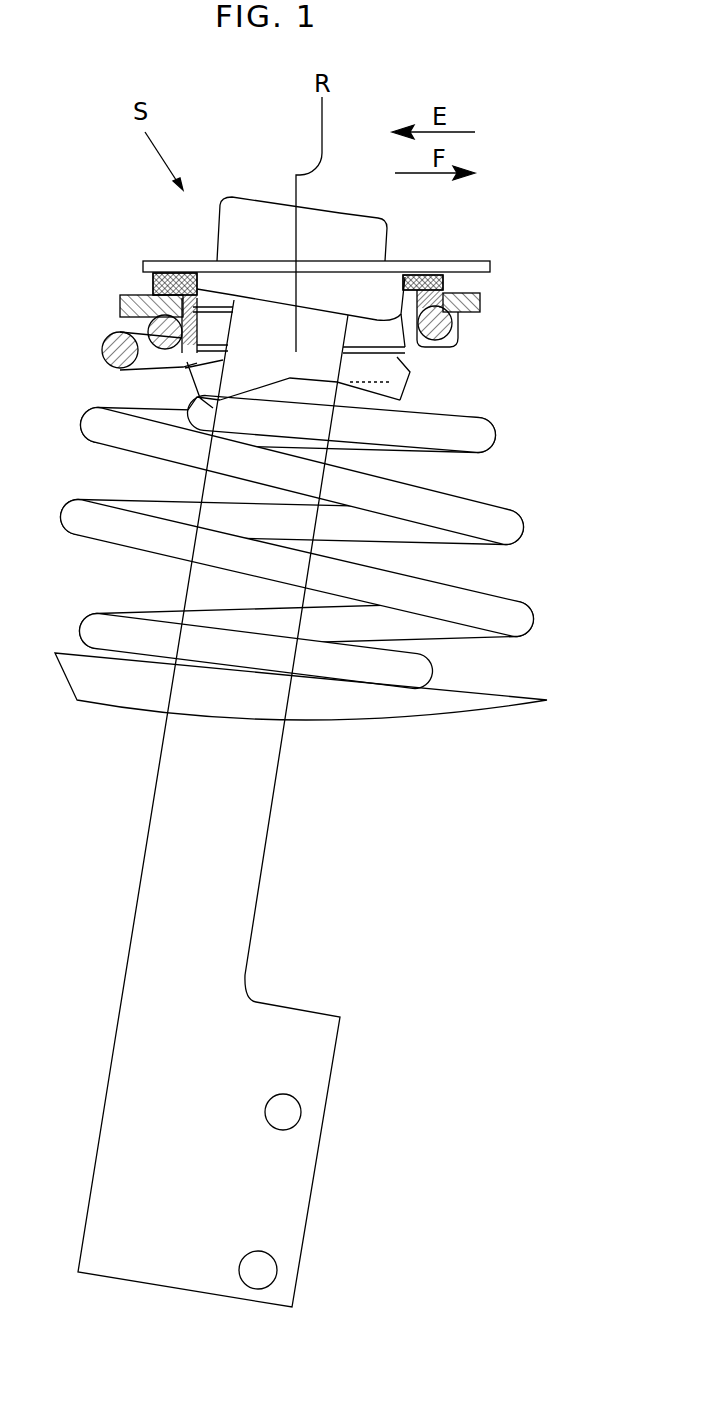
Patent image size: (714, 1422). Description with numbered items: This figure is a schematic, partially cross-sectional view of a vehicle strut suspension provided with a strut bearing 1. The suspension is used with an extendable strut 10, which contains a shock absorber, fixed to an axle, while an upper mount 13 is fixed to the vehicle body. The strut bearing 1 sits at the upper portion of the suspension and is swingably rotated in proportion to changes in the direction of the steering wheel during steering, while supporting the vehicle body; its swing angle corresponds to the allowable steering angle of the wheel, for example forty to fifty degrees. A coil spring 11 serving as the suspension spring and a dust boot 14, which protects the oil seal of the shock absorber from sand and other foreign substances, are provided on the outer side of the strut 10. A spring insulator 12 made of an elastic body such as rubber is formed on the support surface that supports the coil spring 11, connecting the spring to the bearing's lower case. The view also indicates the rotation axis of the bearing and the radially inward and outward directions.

The strut bearing 1 is at (145, 288).
The strut 10 is at (265, 852).
The coil spring 11 is at (487, 433).
The spring insulator 12 is at (480, 307).
The upper mount 13 is at (482, 258).
The dust boot 14 is at (312, 555).